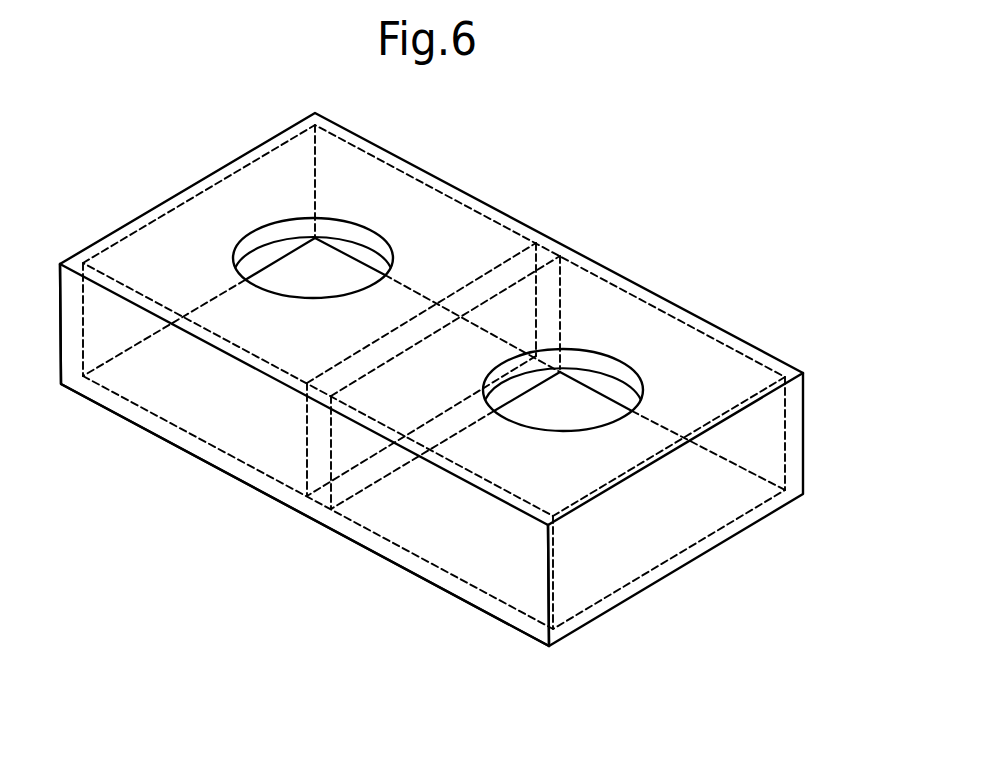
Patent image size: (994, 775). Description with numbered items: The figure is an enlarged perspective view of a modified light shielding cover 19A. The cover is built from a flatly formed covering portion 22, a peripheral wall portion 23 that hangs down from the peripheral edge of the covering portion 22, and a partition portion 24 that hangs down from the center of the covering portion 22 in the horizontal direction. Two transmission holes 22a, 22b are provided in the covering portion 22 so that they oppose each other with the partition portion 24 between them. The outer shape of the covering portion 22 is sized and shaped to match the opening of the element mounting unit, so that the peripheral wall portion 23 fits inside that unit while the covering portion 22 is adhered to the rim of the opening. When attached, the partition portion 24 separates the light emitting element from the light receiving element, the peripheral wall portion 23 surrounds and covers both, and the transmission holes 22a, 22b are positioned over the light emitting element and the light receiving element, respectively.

The light shielding cover 19A is at (427, 357).
The covering portion 22 is at (388, 195).
The transmission hole 22a is at (268, 239).
The transmission hole 22b is at (602, 366).
The peripheral wall portion 23 is at (137, 373).
The partition portion 24 is at (378, 482).